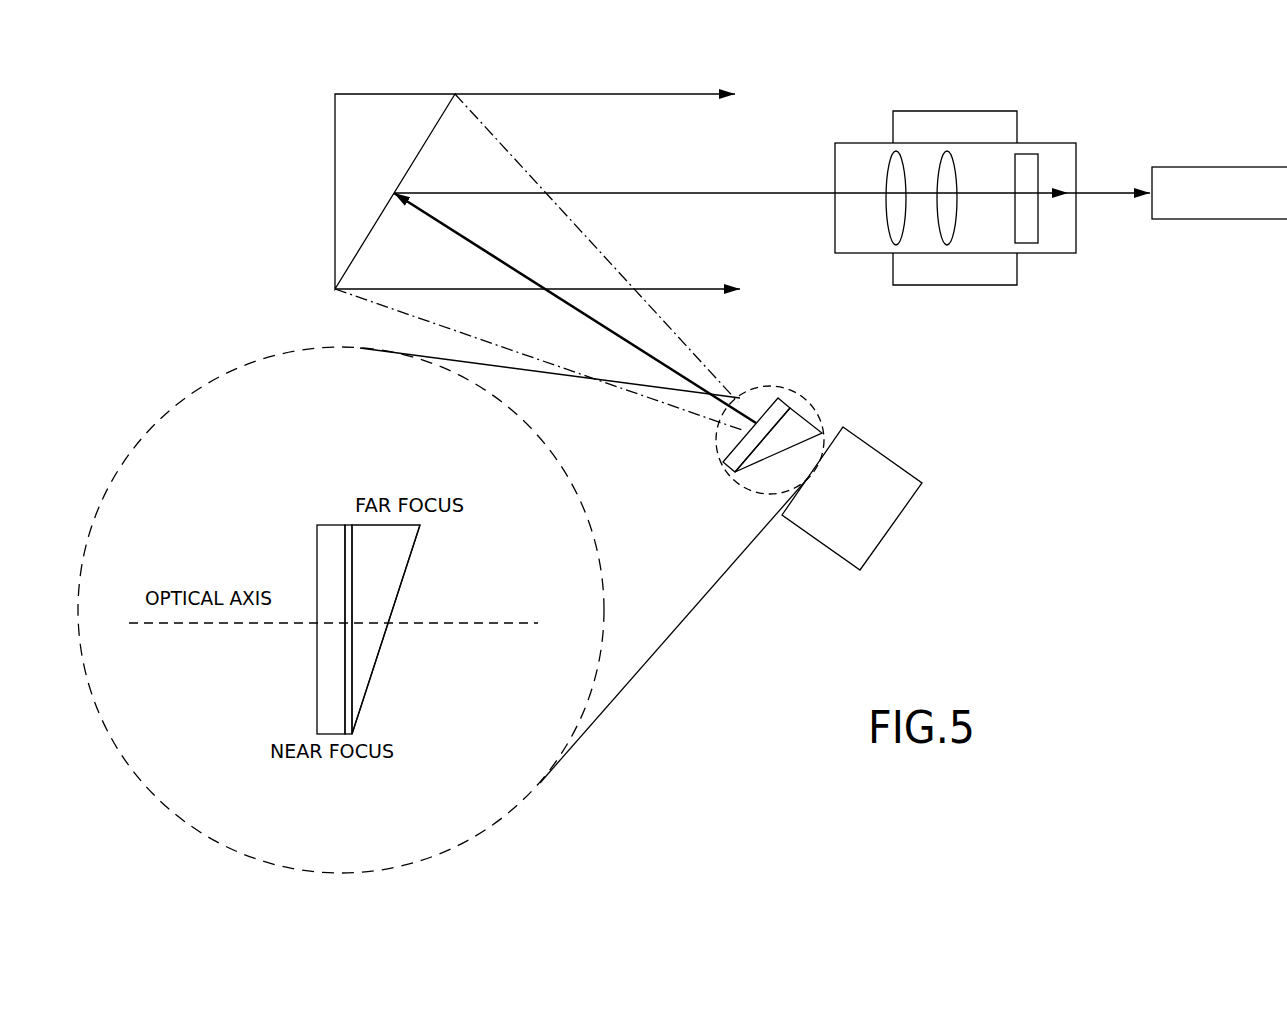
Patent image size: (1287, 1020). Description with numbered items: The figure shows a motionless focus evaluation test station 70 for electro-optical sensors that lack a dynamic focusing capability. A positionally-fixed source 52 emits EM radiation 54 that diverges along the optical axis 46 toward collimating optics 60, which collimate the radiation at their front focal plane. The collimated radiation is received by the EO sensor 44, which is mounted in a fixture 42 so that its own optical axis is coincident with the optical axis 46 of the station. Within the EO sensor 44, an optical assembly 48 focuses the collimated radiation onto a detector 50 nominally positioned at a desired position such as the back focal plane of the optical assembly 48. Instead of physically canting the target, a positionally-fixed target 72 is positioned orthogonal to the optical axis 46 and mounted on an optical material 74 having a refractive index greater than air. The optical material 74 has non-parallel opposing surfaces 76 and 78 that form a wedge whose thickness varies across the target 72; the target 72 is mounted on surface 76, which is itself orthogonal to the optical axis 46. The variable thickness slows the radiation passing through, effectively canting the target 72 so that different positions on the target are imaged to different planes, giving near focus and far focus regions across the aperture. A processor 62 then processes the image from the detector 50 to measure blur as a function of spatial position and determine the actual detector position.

The fixture 42 is at (1003, 285).
The EO sensor 44 is at (1058, 136).
The optical axis 46 is at (493, 250).
The optical assembly 48 is at (935, 198).
The detector 50 is at (1040, 192).
The source 52 is at (870, 445).
The EM radiation 54 is at (672, 327).
The collimating optics 60 is at (333, 191).
The processor 62 is at (1246, 167).
The motionless focus evaluation test station 70 is at (1078, 472).
The target 72 is at (730, 443).
The optical material 74 is at (800, 416).
The surface 76 is at (348, 581).
The surface 78 is at (383, 640).